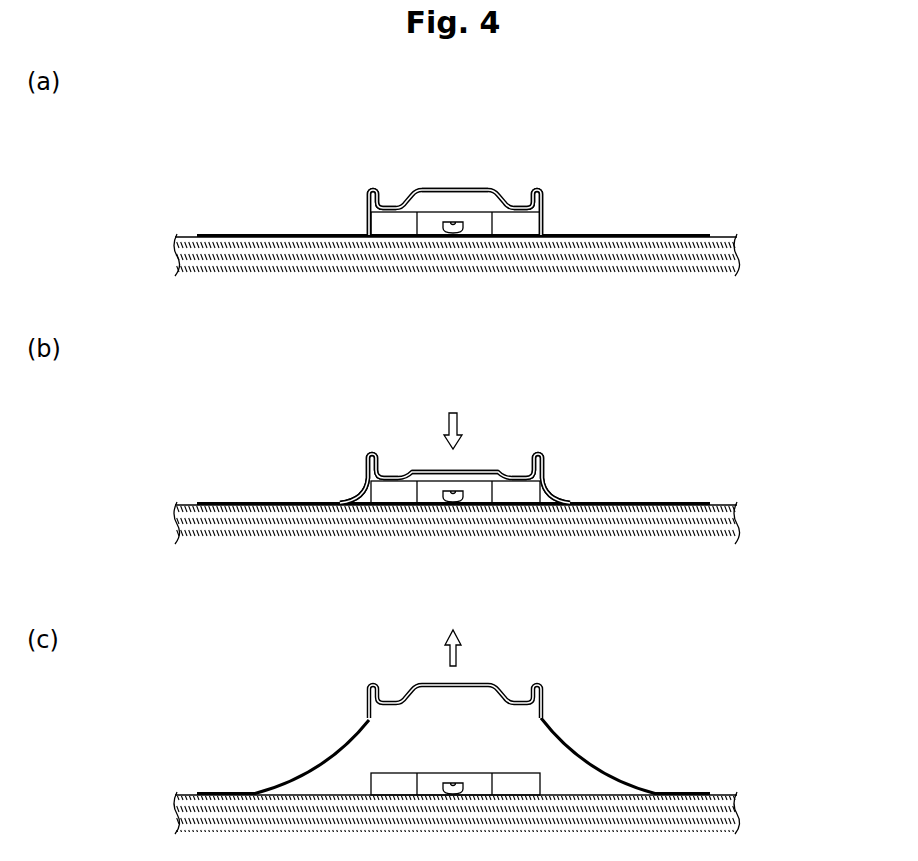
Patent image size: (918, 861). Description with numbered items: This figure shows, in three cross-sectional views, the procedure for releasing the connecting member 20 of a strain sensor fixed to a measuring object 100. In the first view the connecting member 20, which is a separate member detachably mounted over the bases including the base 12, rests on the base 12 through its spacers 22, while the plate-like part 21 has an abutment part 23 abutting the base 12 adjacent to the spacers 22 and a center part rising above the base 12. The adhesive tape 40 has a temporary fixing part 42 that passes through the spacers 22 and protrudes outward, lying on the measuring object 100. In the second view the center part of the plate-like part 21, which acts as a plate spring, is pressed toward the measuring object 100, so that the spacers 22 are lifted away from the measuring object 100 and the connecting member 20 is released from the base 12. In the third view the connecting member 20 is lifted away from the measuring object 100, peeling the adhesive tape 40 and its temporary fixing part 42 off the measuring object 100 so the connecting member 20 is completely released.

The second base 12 is at (398, 233).
The connecting member 20 is at (436, 184).
The plate-like part 21 is at (477, 187).
The spacers 22 is at (369, 202).
The abutment part 23 is at (384, 207).
The adhesive tape 40 is at (453, 495).
The temporary fixing part 42 is at (304, 232).
The measuring object 100 is at (729, 252).